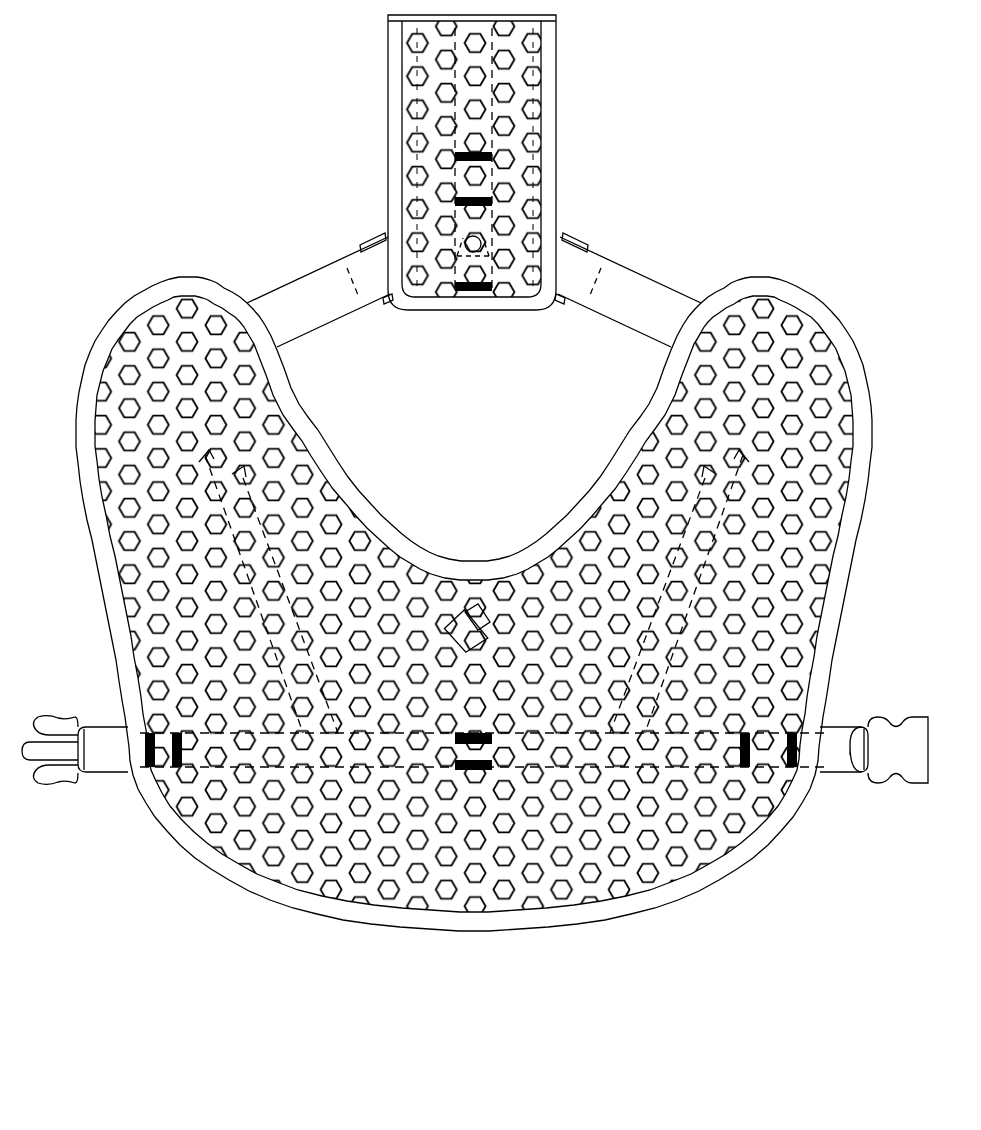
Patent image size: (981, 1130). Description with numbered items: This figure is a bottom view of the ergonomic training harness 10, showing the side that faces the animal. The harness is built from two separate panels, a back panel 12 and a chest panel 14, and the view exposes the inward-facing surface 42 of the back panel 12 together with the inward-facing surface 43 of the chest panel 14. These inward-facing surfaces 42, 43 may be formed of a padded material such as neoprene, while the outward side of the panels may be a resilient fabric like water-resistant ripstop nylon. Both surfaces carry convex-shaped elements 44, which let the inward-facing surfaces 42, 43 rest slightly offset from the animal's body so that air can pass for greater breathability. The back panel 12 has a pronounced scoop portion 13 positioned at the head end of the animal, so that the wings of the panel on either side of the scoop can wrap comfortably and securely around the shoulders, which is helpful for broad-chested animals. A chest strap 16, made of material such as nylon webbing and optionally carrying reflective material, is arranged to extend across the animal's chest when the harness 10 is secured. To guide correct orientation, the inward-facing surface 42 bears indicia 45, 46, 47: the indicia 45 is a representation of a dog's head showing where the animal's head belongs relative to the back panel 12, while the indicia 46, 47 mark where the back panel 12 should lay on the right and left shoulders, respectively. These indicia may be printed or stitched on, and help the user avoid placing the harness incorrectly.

The ergonomic training harness 10 is at (180, 98).
The back panel 12 is at (345, 471).
The scoop portion 13 is at (437, 551).
The chest panel 14 is at (386, 69).
The chest strap 16 is at (330, 284).
The inward-facing surface of back panel 42 is at (625, 503).
The inward-facing surface of chest panel 43 is at (518, 90).
The convex-shaped elements 44 is at (297, 540).
The indicia 45 is at (470, 613).
The indicia 46 is at (170, 357).
The indicia 47 is at (743, 373).